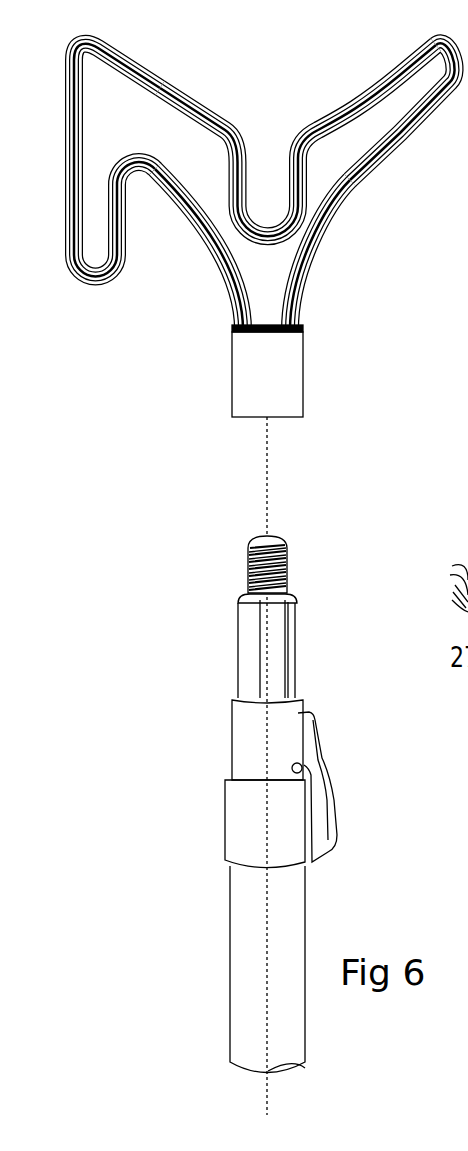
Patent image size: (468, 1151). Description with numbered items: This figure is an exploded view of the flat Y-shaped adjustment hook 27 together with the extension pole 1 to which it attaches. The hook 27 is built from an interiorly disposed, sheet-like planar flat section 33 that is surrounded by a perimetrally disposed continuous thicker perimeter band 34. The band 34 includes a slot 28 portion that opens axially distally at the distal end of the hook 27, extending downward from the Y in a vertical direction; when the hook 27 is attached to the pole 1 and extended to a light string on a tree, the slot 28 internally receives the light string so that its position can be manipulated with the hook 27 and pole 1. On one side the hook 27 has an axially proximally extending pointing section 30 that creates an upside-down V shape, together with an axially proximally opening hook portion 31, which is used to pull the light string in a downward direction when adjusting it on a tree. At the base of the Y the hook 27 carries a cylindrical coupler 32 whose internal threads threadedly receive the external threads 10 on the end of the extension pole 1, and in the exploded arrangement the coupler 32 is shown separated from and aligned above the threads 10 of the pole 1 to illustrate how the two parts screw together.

The extension pole 1 is at (247, 960).
The external threads 10 is at (247, 574).
The Y-shaped adjustment hook 27 is at (378, 168).
The slot 28 is at (268, 197).
The pointing section 30 is at (92, 213).
The hook portion 31 is at (152, 200).
The cylindrical coupler 32 is at (262, 382).
The flat section 33 is at (270, 187).
The perimeter band 34 is at (83, 37).